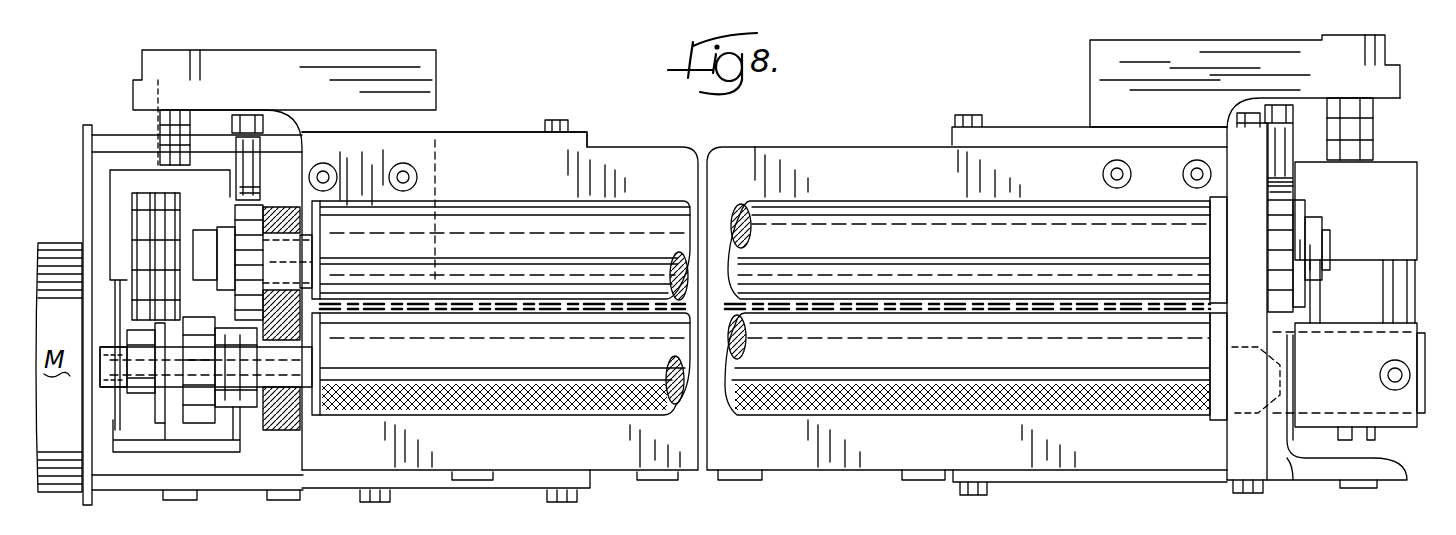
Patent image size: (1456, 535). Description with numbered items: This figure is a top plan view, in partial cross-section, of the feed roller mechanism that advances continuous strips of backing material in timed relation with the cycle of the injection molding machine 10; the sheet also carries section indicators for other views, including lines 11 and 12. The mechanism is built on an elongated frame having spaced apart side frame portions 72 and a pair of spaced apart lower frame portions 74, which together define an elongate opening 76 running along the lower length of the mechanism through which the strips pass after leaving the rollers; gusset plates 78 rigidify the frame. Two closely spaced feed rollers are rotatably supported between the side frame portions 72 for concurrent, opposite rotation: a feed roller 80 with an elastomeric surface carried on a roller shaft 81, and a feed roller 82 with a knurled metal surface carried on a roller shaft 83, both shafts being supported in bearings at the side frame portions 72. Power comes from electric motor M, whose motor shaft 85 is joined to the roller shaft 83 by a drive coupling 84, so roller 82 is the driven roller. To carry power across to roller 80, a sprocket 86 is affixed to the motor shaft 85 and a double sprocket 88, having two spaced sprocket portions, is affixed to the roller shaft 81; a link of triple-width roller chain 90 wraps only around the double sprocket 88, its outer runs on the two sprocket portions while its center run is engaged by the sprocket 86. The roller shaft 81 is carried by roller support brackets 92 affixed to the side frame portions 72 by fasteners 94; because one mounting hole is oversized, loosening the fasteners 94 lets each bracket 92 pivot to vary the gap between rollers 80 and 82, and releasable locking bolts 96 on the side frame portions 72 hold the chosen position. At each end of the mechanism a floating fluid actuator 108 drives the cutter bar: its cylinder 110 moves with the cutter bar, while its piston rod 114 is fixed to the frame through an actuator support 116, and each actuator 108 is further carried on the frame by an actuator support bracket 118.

The injection molding machine 10 is at (128, 44).
The section line 11- 11 is at (655, 131).
The section line 12- 12 is at (243, 290).
The side frame portion 72 is at (304, 447).
The lower frame portion 74 is at (768, 147).
The elongate opening 76 is at (735, 302).
The gusset plate 78 is at (478, 132).
The feed roller 80 is at (895, 215).
The roller shaft 81 is at (318, 258).
The feed roller 82 is at (862, 415).
The roller shaft 83 is at (318, 367).
The drive coupling 84 is at (205, 423).
The motor shaft 85 is at (110, 367).
The sprocket 86 is at (157, 423).
The double sprocket 88 is at (195, 218).
The triple-width roller chain 90 is at (120, 208).
The roller support bracket 92 is at (267, 212).
The fastener 94 is at (1310, 283).
The releasable locking bolt 96 is at (265, 127).
The fluid actuator 108 is at (113, 184).
The cylinder 110 is at (1385, 278).
The piston rod 114 is at (178, 126).
The actuator support 116 is at (436, 74).
The actuator support bracket 118 is at (1395, 462).